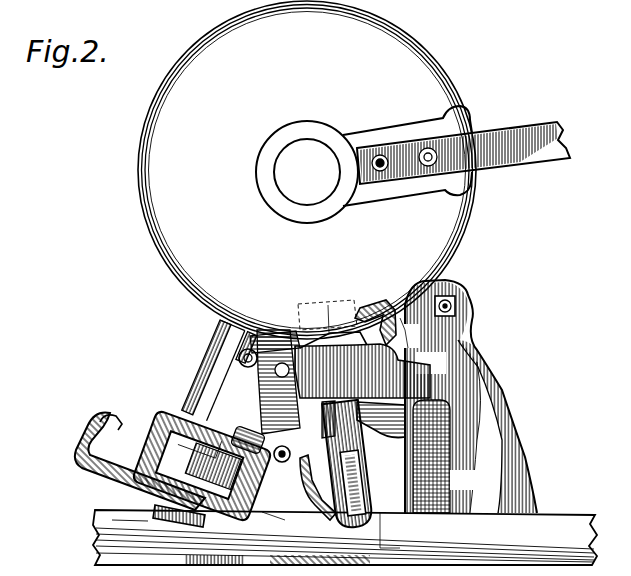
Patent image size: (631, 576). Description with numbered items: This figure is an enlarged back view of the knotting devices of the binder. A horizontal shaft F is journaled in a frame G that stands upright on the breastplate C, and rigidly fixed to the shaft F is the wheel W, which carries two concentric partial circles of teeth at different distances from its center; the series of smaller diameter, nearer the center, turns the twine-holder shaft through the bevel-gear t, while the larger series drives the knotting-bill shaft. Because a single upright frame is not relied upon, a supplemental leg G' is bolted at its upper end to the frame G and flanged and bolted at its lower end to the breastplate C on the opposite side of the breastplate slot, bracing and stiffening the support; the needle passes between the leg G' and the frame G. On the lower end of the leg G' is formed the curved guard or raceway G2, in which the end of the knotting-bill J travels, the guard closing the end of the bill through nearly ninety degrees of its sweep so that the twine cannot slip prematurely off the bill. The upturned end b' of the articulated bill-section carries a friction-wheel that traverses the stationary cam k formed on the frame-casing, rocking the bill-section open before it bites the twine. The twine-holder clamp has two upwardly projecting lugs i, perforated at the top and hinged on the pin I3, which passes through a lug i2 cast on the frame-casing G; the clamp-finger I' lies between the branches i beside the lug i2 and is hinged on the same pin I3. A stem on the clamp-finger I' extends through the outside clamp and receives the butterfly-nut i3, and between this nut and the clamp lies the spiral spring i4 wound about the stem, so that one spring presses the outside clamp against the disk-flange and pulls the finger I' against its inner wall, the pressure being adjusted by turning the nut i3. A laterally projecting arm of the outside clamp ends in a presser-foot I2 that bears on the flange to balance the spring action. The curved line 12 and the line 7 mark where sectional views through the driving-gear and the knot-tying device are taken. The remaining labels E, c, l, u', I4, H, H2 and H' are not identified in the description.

The wheel W is at (307, 170).
The horizontal shaft F is at (307, 172).
The arm E is at (502, 132).
The breastplate C is at (555, 525).
The slot in bed c is at (123, 521).
The frame G is at (471, 396).
The supplemental leg G' is at (446, 456).
The curved guard or raceway G2 is at (407, 530).
The link l is at (410, 333).
The pin I3 is at (238, 353).
The clamp-finger I' is at (275, 329).
The section line 12 is at (320, 317).
The section line 7 is at (328, 309).
The bevel-gear t is at (354, 318).
The hook u' is at (375, 305).
The upwardly-projecting lugs i is at (243, 364).
The lug i2 is at (322, 412).
The spiral spring i4 is at (350, 458).
The cam k is at (381, 420).
The upturned end of bill-section b' is at (359, 464).
The butterfly-nut i3 is at (300, 468).
The knotting-bill J is at (286, 455).
The presser-foot I2 is at (154, 427).
The block I4 is at (225, 457).
The clamp lever H is at (136, 463).
The clamp hook H2 is at (100, 424).
The clamp foot H' is at (227, 519).